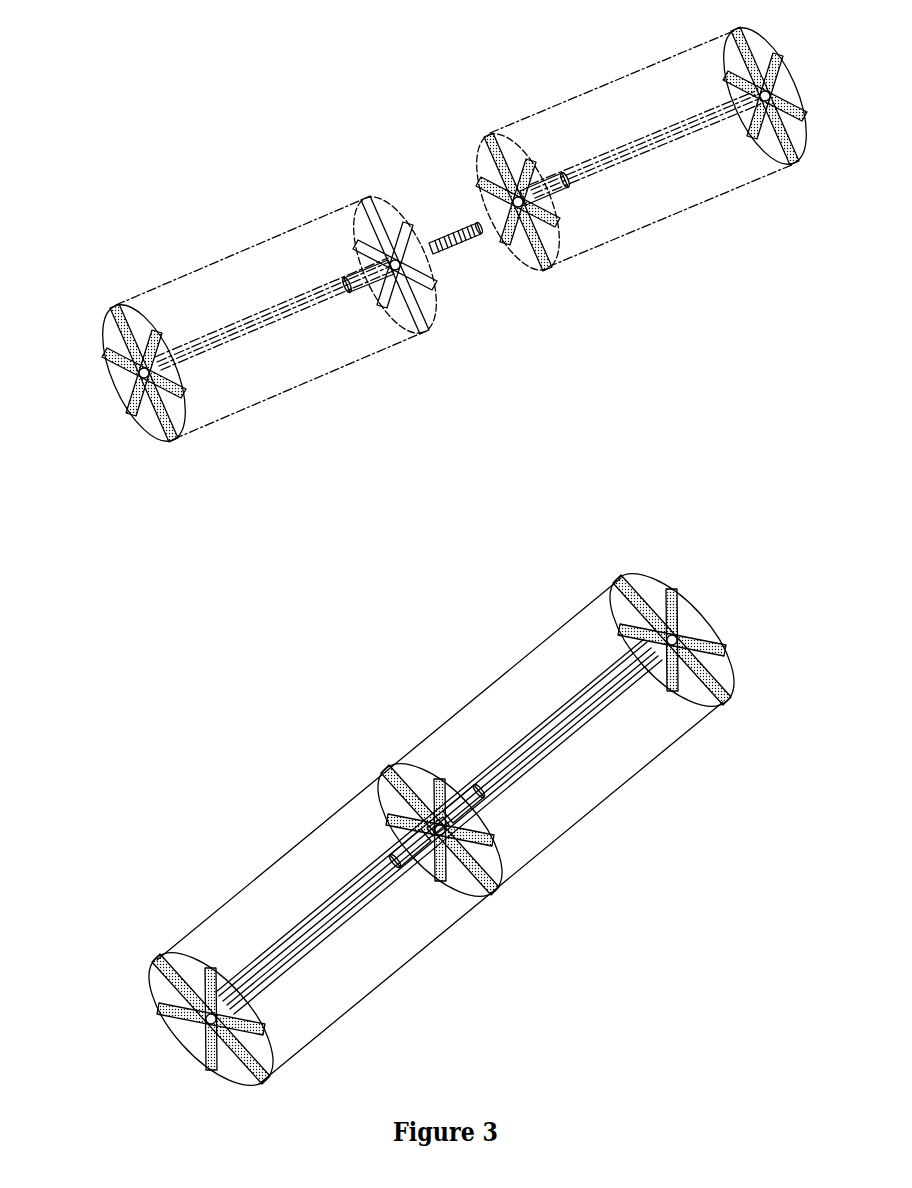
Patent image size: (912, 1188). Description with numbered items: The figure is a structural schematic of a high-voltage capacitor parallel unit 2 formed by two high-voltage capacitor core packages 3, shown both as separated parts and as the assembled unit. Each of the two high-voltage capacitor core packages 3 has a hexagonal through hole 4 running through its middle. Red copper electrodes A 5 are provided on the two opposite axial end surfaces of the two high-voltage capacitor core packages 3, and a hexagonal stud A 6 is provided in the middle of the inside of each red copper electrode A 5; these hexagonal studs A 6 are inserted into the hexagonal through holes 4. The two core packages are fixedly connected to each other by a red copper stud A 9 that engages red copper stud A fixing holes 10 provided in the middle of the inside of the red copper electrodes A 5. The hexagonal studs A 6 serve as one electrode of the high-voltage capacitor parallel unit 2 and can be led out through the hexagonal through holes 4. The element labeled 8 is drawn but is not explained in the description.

The high-voltage capacitor parallel unit 2 is at (628, 1086).
The high-voltage capacitor core package 3 is at (455, 557).
The hexagonal through hole 4 is at (454, 552).
The red copper electrode A 5 is at (510, 498).
The hexagonal stud A 6 is at (393, 447).
The end support disc 8 is at (452, 560).
The red copper stud A 9 is at (411, 529).
The red copper stud A fixing hole 10 is at (477, 168).